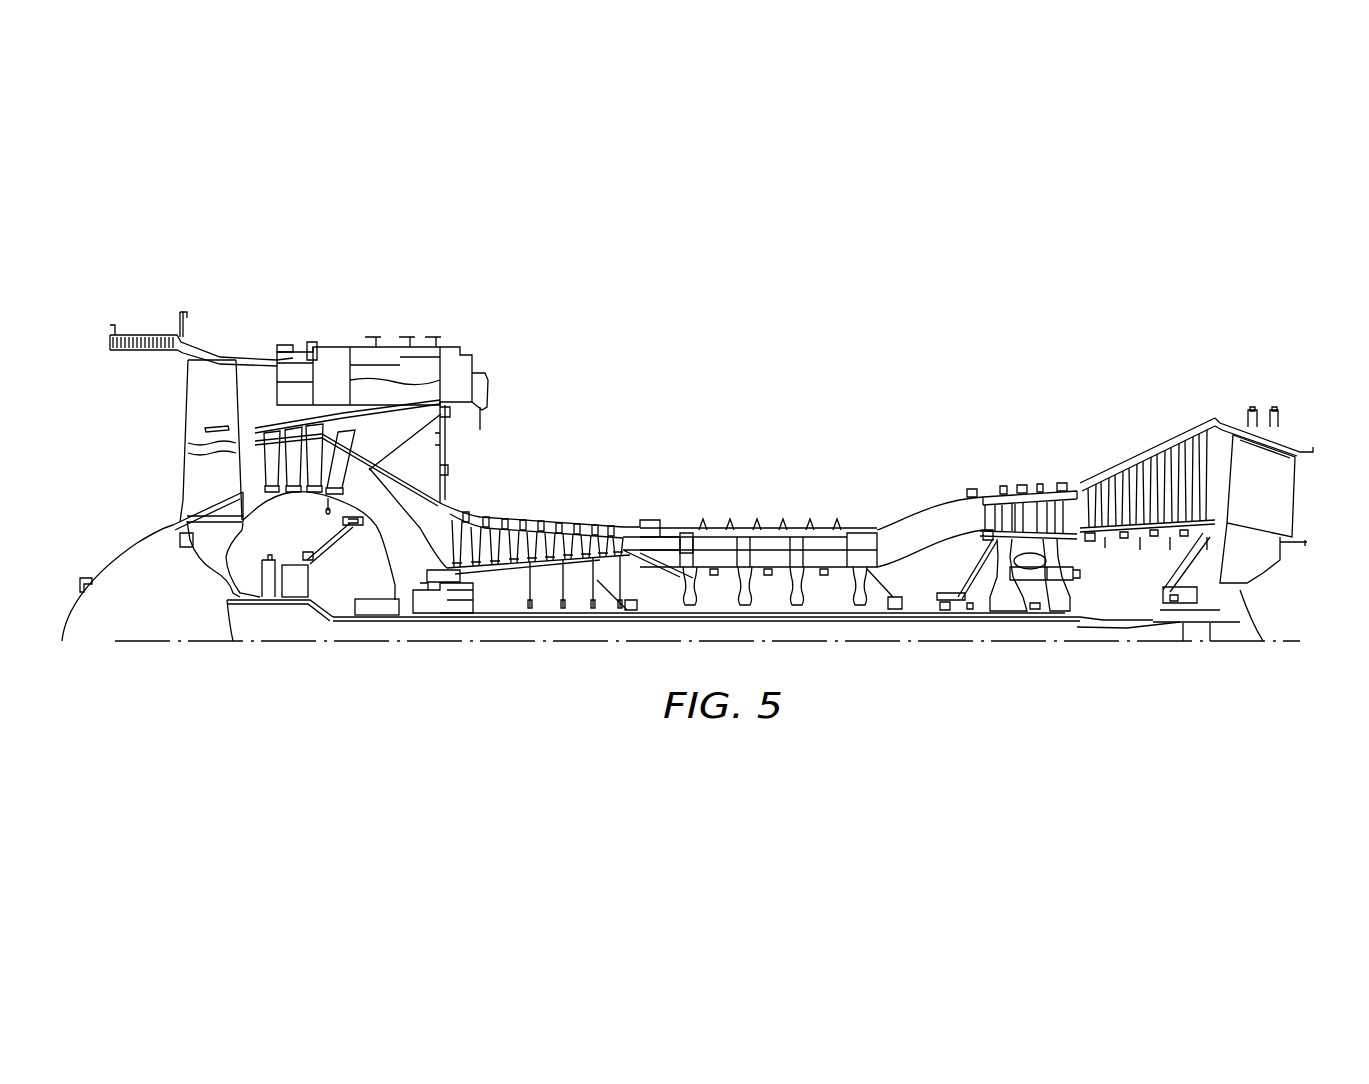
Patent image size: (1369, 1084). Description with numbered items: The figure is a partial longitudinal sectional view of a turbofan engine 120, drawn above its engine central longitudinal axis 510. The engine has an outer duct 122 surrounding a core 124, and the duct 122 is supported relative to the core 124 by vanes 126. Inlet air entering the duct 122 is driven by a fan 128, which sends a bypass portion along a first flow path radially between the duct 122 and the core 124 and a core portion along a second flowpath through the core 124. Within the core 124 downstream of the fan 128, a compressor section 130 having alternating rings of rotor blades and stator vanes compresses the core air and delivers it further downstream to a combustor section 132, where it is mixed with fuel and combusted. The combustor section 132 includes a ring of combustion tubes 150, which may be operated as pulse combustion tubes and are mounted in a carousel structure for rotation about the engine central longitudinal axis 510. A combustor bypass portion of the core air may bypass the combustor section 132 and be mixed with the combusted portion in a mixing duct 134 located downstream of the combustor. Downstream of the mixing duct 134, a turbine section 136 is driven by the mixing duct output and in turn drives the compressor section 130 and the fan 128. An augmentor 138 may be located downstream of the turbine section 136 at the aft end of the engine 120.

The turbofan engine 120 is at (690, 357).
The duct 122 is at (262, 357).
The core 124 is at (500, 490).
The vanes 126 is at (293, 404).
The fan 128 is at (190, 484).
The compressor section 130 is at (547, 543).
The combustor section 132 is at (755, 520).
The mixing duct 134 is at (923, 510).
The turbine section 136 is at (1080, 500).
The augmentor 138 is at (1300, 534).
The combustion tubes 150 is at (828, 533).
The engine central longitudinal axis 510 is at (505, 642).